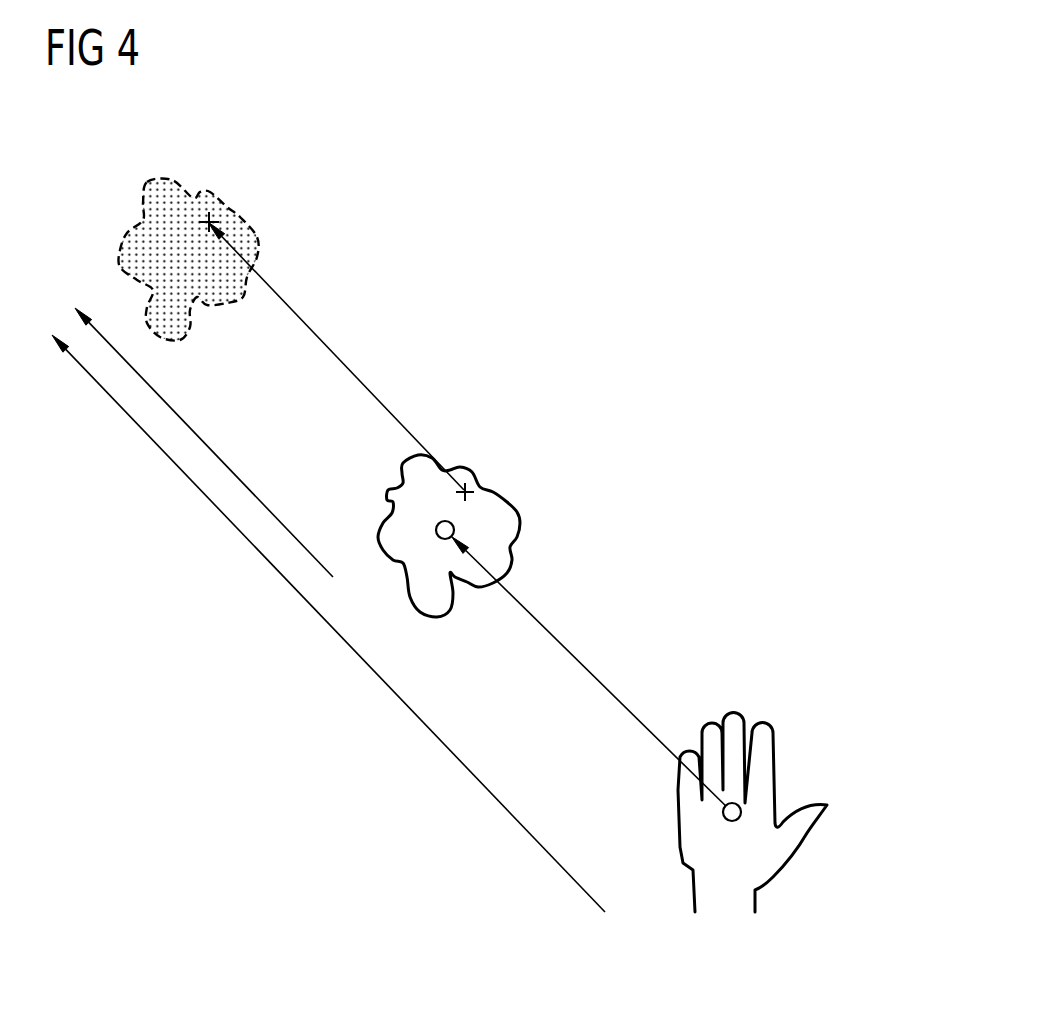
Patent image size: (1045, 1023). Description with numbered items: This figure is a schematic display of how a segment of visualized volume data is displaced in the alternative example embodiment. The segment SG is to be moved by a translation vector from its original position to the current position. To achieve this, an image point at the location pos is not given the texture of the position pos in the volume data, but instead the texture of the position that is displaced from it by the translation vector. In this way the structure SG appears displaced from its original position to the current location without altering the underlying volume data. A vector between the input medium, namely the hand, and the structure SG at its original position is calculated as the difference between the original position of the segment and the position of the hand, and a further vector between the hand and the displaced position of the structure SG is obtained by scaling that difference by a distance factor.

The segment SG is at (160, 180).
The position pos is at (211, 221).